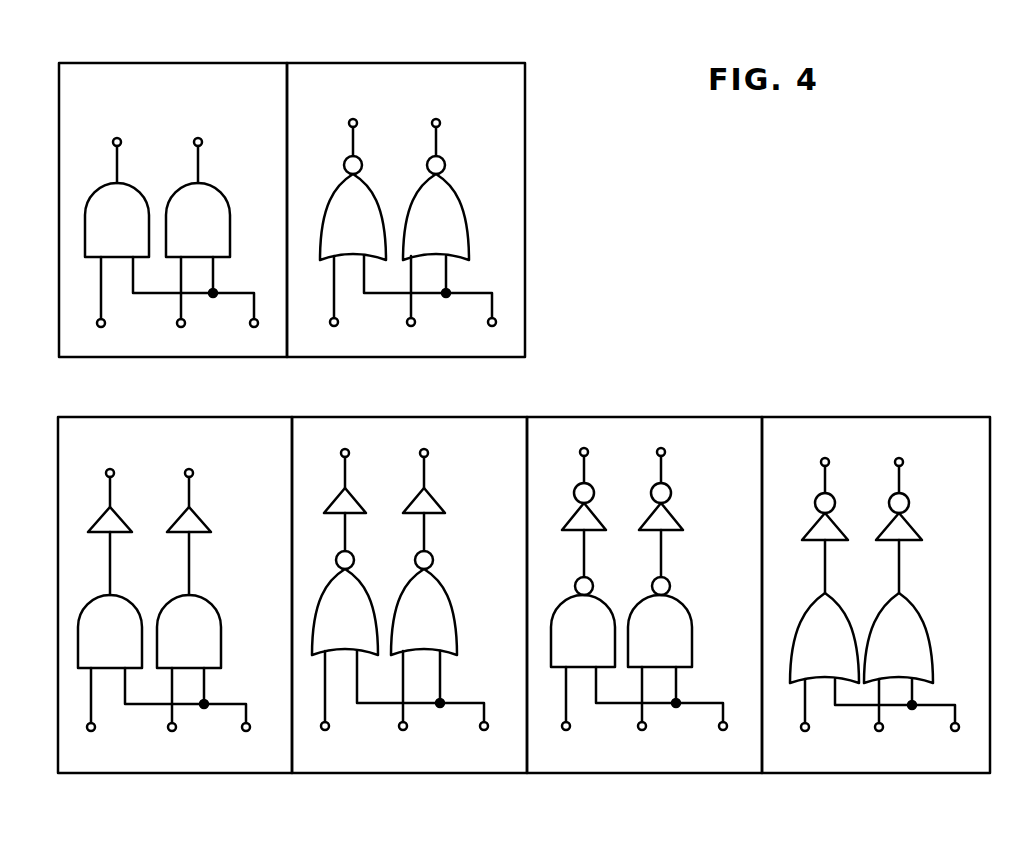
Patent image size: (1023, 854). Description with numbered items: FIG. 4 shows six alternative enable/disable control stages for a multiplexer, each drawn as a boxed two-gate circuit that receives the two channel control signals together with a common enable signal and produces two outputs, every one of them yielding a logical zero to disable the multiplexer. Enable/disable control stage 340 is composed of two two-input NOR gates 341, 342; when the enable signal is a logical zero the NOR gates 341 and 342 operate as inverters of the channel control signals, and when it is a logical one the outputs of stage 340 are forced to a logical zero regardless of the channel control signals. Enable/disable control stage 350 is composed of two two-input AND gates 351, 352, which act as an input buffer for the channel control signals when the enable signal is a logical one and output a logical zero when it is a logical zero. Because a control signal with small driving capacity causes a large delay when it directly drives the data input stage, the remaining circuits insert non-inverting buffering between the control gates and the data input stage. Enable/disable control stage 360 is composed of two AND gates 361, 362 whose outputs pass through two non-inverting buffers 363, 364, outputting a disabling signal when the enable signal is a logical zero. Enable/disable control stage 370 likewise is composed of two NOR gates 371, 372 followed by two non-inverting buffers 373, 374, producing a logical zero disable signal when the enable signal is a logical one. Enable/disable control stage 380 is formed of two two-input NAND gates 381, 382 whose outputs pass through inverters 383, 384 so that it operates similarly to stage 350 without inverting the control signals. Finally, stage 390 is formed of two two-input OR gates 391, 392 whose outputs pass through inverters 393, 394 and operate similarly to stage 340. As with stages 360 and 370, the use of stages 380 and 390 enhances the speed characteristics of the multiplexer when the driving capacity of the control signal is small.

The enable/disable control stage 340 is at (410, 62).
The NOR gate 341 is at (353, 208).
The NOR gate 342 is at (436, 208).
The enable/disable control stage 350 is at (221, 62).
The AND gate 351 is at (117, 220).
The AND gate 352 is at (198, 220).
The enable/disable control stage 360 is at (228, 416).
The AND gate 361 is at (110, 631).
The AND gate 362 is at (189, 631).
The non-inverting buffer 363 is at (126, 518).
The non-inverting buffer 364 is at (205, 518).
The enable/disable control stage 370 is at (418, 416).
The NOR gate 371 is at (345, 603).
The NOR gate 372 is at (424, 603).
The non-inverting buffer 373 is at (360, 500).
The non-inverting buffer 374 is at (441, 500).
The enable/disable control stage 380 is at (674, 416).
The NAND gate 381 is at (583, 622).
The NAND gate 382 is at (660, 622).
The inverter 383 is at (600, 516).
The inverter 384 is at (673, 516).
The enable/disable control stage 390 is at (862, 416).
The OR gate 391 is at (824, 638).
The OR gate 392 is at (898, 638).
The inverter 393 is at (840, 516).
The inverter 394 is at (913, 516).